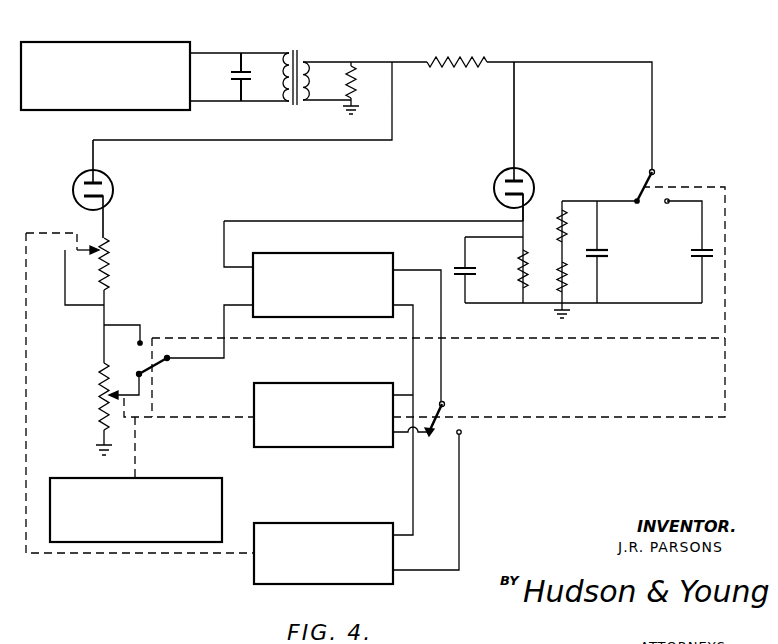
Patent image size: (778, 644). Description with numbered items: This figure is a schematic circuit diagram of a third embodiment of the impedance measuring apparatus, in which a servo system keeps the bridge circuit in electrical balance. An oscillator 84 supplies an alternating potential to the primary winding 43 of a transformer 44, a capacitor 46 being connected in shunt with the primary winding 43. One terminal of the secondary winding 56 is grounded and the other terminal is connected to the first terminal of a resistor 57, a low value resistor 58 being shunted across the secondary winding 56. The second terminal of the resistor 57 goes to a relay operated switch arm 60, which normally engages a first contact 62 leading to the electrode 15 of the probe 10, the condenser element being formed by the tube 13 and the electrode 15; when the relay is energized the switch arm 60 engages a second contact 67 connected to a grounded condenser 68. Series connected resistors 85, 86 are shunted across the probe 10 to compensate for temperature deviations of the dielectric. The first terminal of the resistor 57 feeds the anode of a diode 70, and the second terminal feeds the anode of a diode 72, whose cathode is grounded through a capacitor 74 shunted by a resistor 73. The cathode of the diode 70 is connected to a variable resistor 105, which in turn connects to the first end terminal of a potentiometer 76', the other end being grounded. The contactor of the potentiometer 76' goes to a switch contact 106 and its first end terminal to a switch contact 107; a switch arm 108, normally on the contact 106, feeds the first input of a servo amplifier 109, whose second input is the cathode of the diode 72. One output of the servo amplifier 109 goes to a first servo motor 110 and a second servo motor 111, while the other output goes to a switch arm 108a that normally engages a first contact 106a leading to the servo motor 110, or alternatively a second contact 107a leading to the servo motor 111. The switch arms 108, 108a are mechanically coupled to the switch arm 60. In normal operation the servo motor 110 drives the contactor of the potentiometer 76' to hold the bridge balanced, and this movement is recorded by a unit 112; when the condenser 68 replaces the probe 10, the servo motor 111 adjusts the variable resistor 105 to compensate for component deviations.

The oscillator 84 is at (101, 45).
The capacitor 46 is at (233, 74).
The primary winding 43 is at (283, 84).
The transformer 44 is at (294, 66).
The secondary winding 56 is at (318, 70).
The low value resistor 58 is at (356, 81).
The resistor 57 is at (464, 68).
The diode 70 is at (112, 184).
The diode 72 is at (532, 176).
The relay operated switch arm 60 is at (645, 185).
The first contact 62 is at (633, 197).
The second contact 67 is at (667, 203).
The probe 10 is at (610, 250).
The electrode 15 is at (595, 249).
The tube 13 is at (604, 258).
The condenser 68 is at (690, 256).
The resistor 85 is at (556, 222).
The resistor 86 is at (568, 284).
The capacitor 74 is at (478, 268).
The resistor 73 is at (518, 284).
The variable resistor 105 is at (113, 262).
The potentiometer 76' is at (83, 396).
The switch contact 107 is at (142, 341).
The switch arm 108 is at (165, 362).
The switch contact 106 is at (143, 378).
The servo amplifier 109 is at (329, 256).
The first servo motor 110 is at (319, 385).
The second servo motor 111 is at (320, 525).
The recorder unit 112 is at (184, 480).
The switch arm 108a is at (449, 412).
The first contact 106a is at (428, 438).
The second contact 107a is at (463, 432).